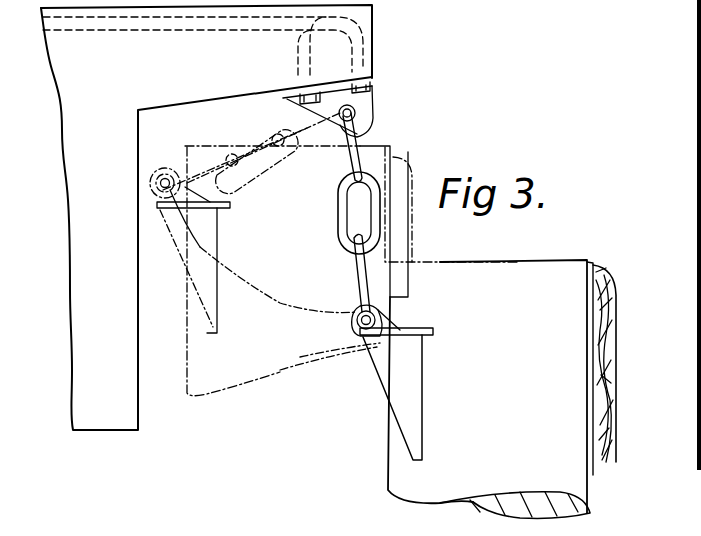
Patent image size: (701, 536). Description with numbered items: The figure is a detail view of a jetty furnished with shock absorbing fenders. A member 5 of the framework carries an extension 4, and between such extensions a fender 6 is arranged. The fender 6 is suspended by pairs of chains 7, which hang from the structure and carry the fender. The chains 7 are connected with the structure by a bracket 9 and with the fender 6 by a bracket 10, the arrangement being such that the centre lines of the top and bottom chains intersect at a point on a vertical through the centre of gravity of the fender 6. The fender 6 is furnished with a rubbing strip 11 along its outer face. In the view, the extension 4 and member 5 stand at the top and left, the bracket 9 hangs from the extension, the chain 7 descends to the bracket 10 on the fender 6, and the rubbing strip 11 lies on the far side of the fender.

The extension 4 is at (365, 35).
The member 5 is at (95, 117).
The fender 6 is at (488, 277).
The chain 7 is at (342, 212).
The bracket 9 is at (355, 102).
The bracket 10 is at (392, 373).
The rubbing strip 11 is at (602, 296).